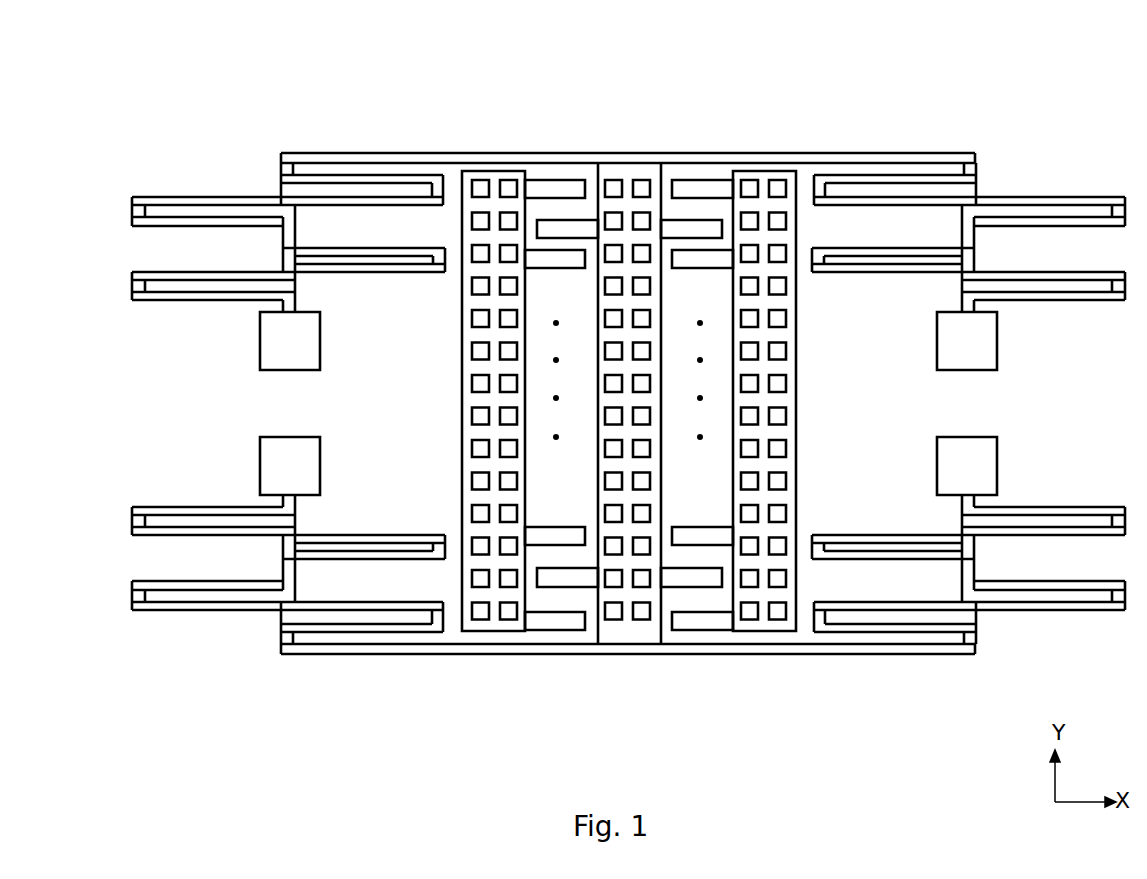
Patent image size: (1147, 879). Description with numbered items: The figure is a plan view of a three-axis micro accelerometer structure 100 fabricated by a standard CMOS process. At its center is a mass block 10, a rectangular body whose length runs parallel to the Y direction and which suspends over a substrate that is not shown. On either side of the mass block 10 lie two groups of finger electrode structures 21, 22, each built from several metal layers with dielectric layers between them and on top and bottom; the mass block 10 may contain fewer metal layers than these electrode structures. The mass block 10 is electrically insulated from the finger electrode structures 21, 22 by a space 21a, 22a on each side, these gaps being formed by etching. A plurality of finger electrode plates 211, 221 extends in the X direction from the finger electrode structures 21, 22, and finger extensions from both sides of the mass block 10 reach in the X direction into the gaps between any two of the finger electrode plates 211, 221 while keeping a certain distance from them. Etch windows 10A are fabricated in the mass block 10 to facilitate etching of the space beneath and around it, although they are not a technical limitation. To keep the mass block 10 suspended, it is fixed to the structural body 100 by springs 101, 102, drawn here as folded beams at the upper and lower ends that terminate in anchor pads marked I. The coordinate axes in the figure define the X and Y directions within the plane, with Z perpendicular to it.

The three-axis micro accelerometer structure 100 is at (783, 31).
The mass block 10 is at (628, 385).
The etch window 10A is at (615, 187).
The spring 101 is at (240, 193).
The spring 102 is at (193, 620).
The finger electrode structure 21 is at (777, 633).
The finger electrode plate 211 is at (702, 177).
The space 21a is at (552, 253).
The finger electrode structure 22 is at (495, 633).
The finger electrode plate 221 is at (562, 177).
The space 22a is at (705, 253).
The anchor I is at (627, 403).